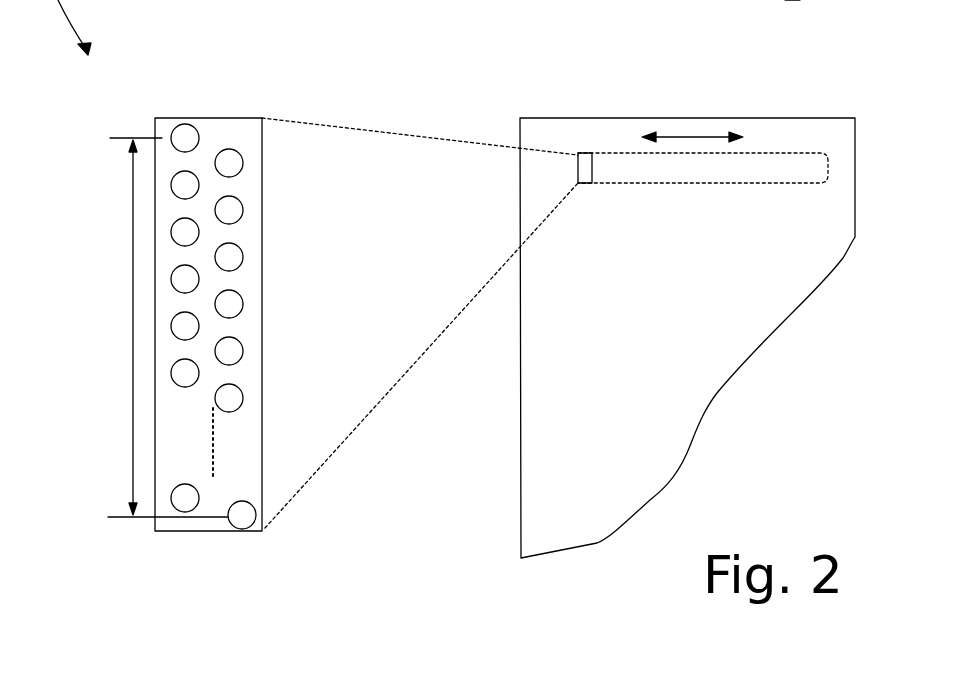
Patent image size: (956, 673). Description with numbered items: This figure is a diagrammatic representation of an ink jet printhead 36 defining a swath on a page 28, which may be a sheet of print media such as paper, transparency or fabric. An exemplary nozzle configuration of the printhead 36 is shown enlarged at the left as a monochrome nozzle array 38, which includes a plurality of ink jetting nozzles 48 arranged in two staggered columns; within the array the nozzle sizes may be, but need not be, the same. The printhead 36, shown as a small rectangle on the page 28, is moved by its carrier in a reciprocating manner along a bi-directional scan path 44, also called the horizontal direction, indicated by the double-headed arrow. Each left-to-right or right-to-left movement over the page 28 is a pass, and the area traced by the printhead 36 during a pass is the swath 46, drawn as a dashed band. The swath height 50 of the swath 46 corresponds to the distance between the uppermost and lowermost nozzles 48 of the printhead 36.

The page 28 is at (543, 117).
The ink jet printhead 36 is at (580, 154).
The nozzle array 38 is at (232, 117).
The bi-directional scan path 44 is at (702, 137).
The swath 46 is at (752, 165).
The ink jetting nozzles 48 is at (187, 123).
The swath height 50 is at (133, 310).